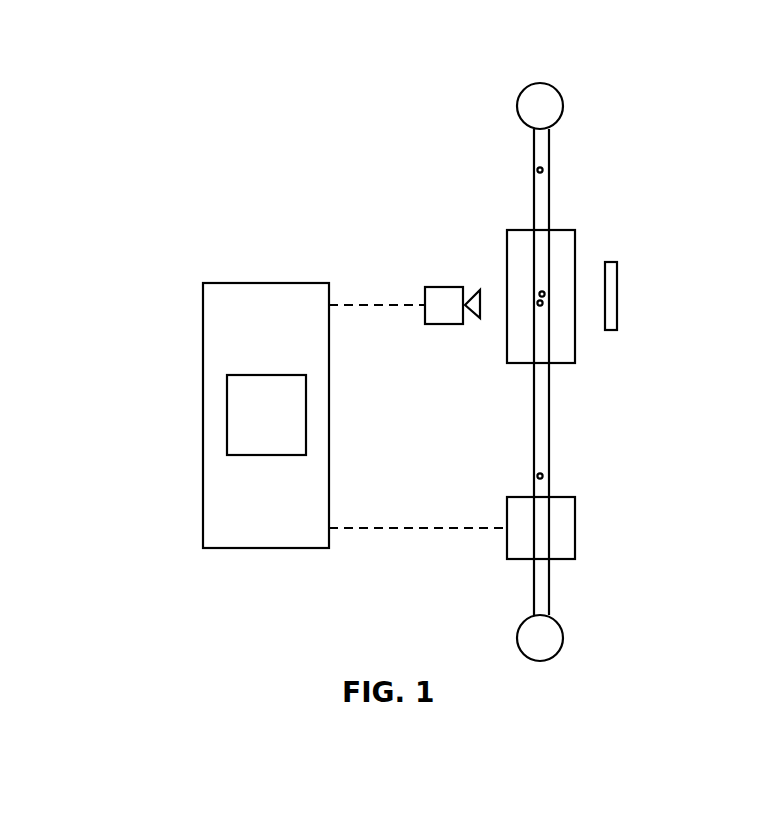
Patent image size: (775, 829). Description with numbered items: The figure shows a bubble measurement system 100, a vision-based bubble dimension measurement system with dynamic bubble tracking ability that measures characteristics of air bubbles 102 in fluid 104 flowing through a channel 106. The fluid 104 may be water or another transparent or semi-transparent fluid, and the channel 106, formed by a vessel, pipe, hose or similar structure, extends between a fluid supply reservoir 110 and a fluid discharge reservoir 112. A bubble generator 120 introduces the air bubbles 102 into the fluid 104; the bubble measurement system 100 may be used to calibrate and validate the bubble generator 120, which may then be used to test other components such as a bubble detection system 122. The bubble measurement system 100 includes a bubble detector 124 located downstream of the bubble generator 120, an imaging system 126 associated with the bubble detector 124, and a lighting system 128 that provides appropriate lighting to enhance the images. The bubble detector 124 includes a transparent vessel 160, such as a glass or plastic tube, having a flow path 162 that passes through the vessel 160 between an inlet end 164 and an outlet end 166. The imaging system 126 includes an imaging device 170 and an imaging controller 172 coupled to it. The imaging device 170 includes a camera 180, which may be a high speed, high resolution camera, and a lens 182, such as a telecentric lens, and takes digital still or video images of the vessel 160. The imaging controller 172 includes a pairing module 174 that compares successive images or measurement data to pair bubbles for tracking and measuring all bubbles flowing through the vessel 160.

The bubble measurement system 100 is at (323, 84).
The air bubbles 102 is at (541, 473).
The fluid 104 is at (541, 593).
The channel 106 is at (550, 440).
The fluid supply reservoir 110 is at (563, 648).
The fluid discharge reservoir 112 is at (562, 95).
The bubble generator 120 is at (575, 527).
The bubble detection system 122 is at (480, 250).
The bubble detector 124 is at (575, 340).
The imaging system 126 is at (192, 312).
The lighting system 128 is at (626, 294).
The vessel 160 is at (548, 275).
The flow path 162 is at (547, 245).
The inlet end 164 is at (557, 363).
The outlet end 166 is at (546, 246).
The imaging device 170 is at (444, 273).
The imaging controller 172 is at (203, 410).
The pairing module 174 is at (227, 432).
The camera 180 is at (443, 324).
The lens 182 is at (480, 312).